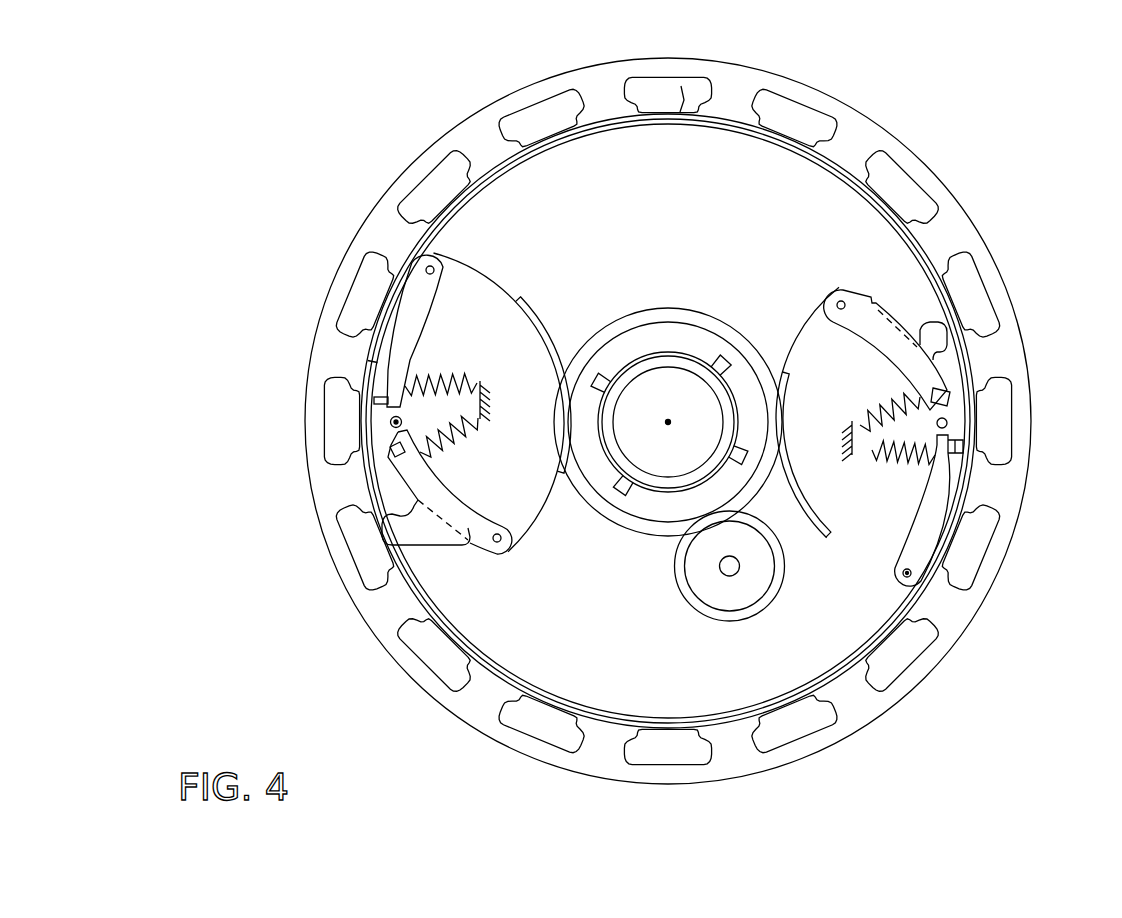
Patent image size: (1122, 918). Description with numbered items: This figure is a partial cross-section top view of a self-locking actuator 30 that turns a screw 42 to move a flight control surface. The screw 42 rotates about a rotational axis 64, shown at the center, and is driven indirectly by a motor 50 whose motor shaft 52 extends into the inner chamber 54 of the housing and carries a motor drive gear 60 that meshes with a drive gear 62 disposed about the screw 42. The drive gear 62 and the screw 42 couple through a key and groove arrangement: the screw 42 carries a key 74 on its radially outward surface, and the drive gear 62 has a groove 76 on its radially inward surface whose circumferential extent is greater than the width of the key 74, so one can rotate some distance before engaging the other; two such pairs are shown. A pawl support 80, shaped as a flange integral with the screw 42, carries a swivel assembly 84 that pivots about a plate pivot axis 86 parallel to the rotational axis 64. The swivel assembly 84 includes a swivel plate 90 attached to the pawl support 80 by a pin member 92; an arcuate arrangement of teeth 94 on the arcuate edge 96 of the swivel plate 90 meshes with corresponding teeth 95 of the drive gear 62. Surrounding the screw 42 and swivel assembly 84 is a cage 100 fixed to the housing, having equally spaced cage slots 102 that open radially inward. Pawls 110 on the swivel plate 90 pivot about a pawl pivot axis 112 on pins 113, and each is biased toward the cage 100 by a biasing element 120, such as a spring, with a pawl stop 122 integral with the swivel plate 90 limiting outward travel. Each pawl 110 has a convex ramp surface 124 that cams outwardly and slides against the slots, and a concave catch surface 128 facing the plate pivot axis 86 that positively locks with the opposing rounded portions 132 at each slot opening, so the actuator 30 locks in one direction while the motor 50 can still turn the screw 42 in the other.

The self-locking actuator 30 is at (986, 160).
The screw 42 is at (634, 367).
The motor 50 is at (695, 589).
The motor shaft 52 is at (720, 562).
The inner chamber 54 is at (592, 653).
The motor drive gear 60 is at (685, 588).
The drive gear 62 is at (598, 500).
The rotational axis 64 is at (668, 421).
The key 74 is at (742, 375).
The groove 76 is at (745, 360).
The pawl support 80 is at (737, 690).
The swivel assembly 84 is at (847, 350).
The plate pivot axis 86 is at (390, 424).
The swivel plate 90 is at (910, 493).
The pin member 92 is at (950, 425).
The arcuate arrangement of teeth 94 is at (533, 293).
The teeth of the drive gear 95 is at (594, 336).
The arcuate edge 96 is at (485, 275).
The cage 100 is at (988, 350).
The cage slots 102 is at (1015, 405).
The pawls 110 is at (365, 330).
The pawl pivot axis 112 is at (912, 572).
The pins 113 is at (500, 552).
The biasing element 120 is at (882, 405).
The pawl stop 122 is at (392, 436).
The ramp surface 124 is at (353, 321).
The catch surface 128 is at (352, 352).
The rounded portions 132 is at (683, 88).